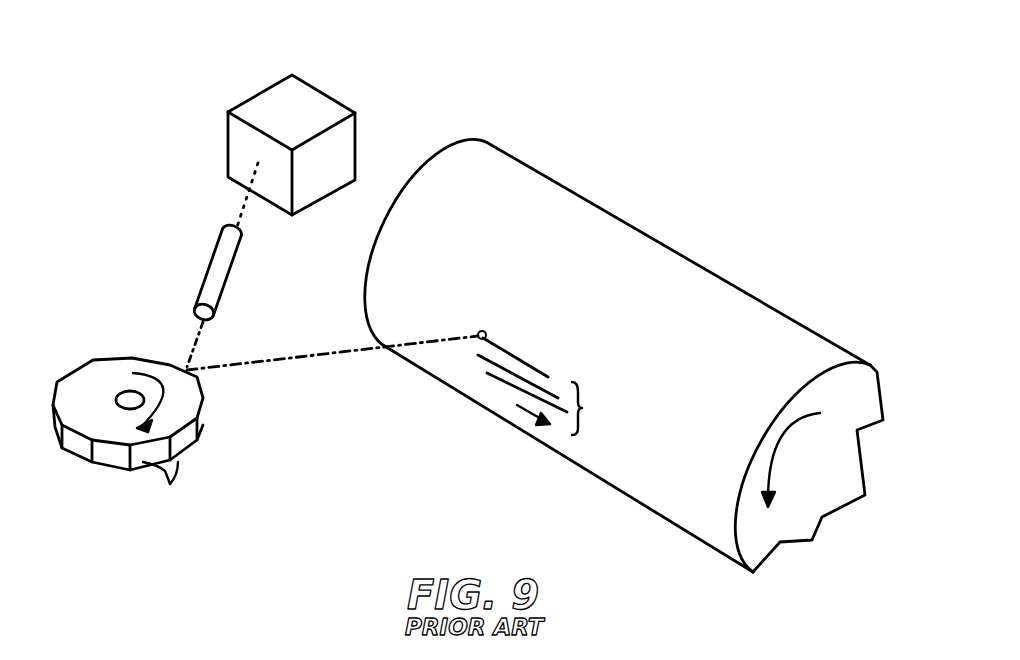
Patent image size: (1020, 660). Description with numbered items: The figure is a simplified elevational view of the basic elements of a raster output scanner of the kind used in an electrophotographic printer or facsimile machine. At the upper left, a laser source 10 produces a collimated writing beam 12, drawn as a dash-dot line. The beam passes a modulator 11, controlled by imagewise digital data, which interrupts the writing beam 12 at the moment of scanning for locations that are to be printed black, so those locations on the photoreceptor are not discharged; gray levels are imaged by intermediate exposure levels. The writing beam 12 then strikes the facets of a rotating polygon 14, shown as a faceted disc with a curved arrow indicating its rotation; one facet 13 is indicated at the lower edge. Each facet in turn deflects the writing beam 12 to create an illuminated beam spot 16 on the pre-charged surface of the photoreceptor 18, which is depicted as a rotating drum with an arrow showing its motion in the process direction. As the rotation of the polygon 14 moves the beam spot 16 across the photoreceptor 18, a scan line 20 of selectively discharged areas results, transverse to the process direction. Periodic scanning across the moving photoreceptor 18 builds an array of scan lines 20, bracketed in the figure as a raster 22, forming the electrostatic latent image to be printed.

The laser source 10 is at (258, 93).
The modulator 11 is at (213, 272).
The writing beam 12 is at (307, 362).
The mirror facet 13 is at (159, 490).
The rotating polygon 14 is at (125, 355).
The beam spot 16 is at (480, 330).
The photoreceptor 18 is at (543, 198).
The scan line 20 is at (523, 350).
The raster 22 is at (582, 408).